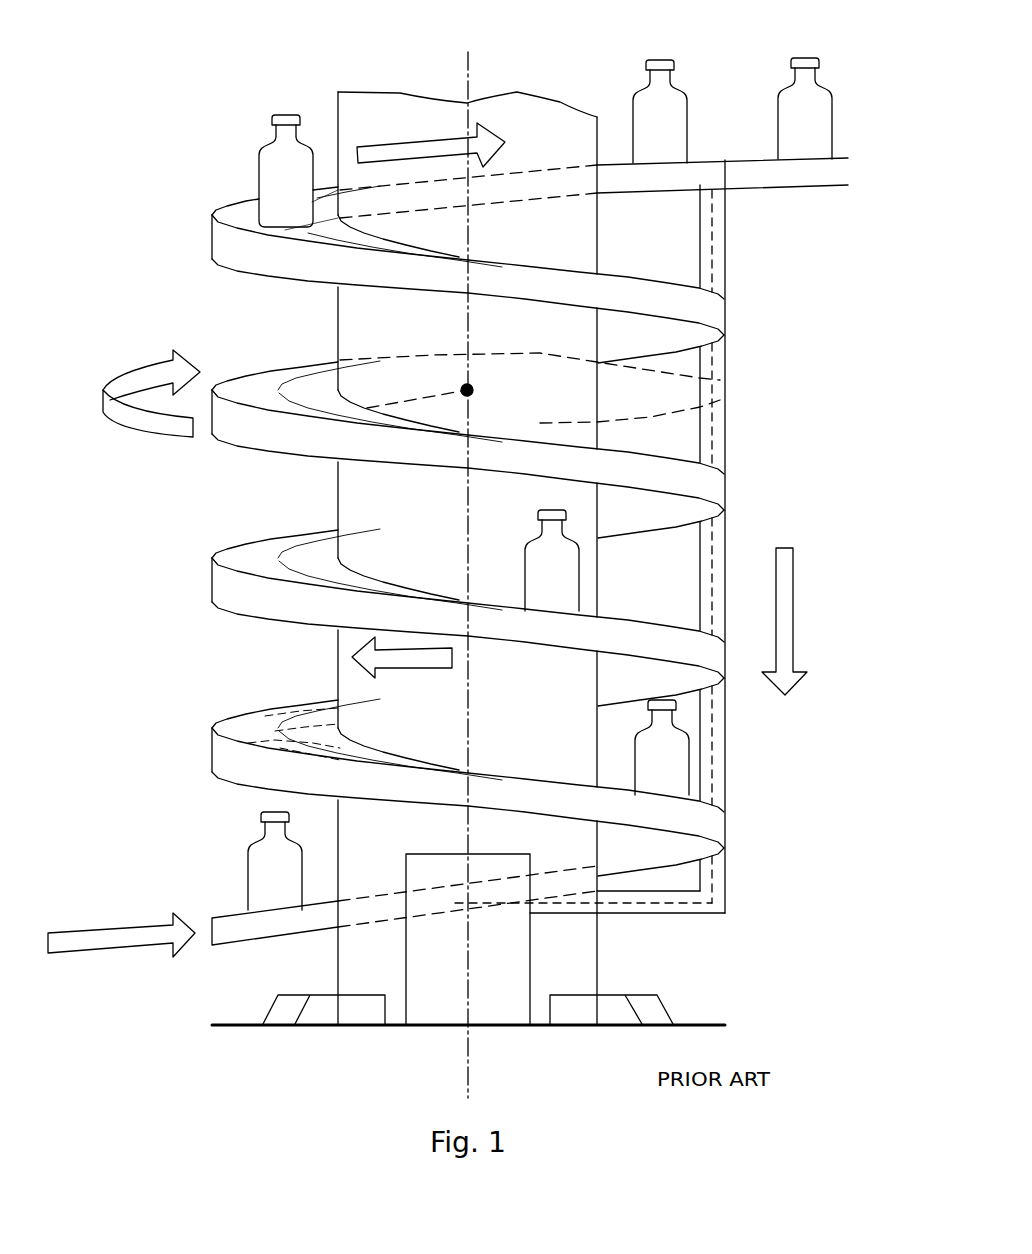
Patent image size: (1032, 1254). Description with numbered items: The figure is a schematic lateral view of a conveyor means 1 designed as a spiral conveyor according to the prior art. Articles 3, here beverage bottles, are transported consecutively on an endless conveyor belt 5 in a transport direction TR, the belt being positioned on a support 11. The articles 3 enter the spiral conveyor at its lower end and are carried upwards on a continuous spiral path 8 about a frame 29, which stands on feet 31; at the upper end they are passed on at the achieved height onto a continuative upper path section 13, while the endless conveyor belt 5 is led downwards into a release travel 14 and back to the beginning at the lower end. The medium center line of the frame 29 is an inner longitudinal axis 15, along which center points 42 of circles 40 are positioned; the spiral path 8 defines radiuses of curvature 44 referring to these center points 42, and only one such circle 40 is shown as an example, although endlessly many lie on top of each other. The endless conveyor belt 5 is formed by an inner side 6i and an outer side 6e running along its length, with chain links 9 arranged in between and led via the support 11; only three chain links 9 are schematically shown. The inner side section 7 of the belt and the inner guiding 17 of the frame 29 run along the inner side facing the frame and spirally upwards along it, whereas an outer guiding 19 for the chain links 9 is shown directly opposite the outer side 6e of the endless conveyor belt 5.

The conveyor means 1 is at (150, 109).
The articles 3 is at (540, 484).
The endless conveyor belt 5 is at (461, 531).
The outer side 6e is at (270, 368).
The inner side 6i is at (367, 408).
The inner side section 7 is at (501, 521).
The spiral path 8 is at (282, 396).
The chain links 9 is at (302, 725).
The support 11 is at (226, 606).
The upper path section 13 is at (788, 172).
The release travel 14 is at (713, 745).
The inner longitudinal axis 15 is at (472, 62).
The inner guiding 17 is at (368, 582).
The outer guiding 19 is at (255, 598).
The frame 29 is at (545, 98).
The feet 31 is at (316, 1012).
The circles 40 is at (653, 417).
The center points 42 is at (475, 390).
The radiuses of curvature 44 is at (437, 393).
The transport direction TR is at (403, 153).